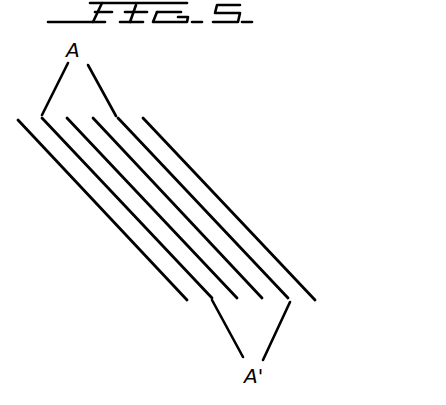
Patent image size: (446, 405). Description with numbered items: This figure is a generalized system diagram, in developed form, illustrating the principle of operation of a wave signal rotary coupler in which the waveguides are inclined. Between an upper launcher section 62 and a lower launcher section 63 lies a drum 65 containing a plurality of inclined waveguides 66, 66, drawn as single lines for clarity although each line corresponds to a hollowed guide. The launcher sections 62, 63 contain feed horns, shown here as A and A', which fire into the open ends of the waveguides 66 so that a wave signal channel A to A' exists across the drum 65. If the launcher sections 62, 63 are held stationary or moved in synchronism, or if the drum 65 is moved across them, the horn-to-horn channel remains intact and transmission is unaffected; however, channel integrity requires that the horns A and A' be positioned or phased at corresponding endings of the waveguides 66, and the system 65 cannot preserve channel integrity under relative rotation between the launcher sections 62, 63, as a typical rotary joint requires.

The launcher section 62 is at (166, 84).
The launcher section 63 is at (334, 351).
The drum 65 is at (133, 242).
The inclined waveguides 66 is at (162, 188).